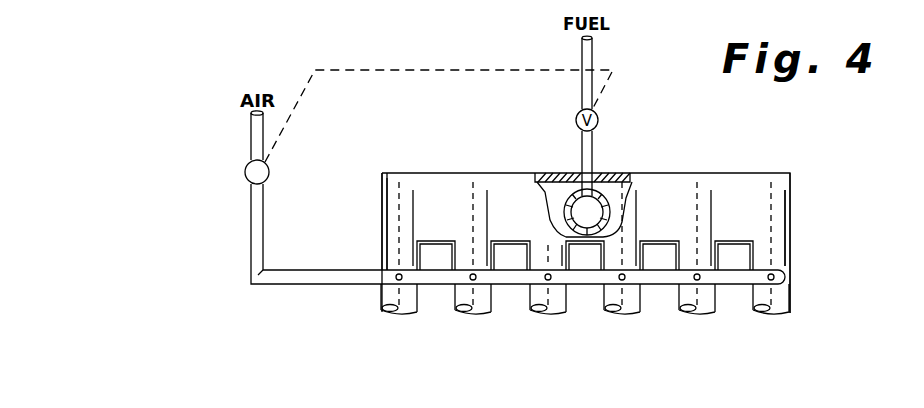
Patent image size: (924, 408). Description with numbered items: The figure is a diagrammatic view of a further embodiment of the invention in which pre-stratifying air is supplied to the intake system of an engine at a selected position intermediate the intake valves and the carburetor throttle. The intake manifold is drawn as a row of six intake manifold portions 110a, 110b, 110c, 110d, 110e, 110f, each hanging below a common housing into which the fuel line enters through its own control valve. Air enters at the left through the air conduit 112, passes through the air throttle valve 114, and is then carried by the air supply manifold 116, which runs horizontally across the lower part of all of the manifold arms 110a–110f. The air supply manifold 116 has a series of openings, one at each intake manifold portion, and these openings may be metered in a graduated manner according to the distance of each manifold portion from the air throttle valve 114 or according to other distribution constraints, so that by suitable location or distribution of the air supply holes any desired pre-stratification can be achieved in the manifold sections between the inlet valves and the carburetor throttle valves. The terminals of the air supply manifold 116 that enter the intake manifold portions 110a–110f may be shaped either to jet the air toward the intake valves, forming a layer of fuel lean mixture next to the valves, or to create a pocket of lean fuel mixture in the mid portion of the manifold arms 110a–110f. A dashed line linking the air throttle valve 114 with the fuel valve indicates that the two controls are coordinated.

The air conduit 112 is at (255, 142).
The air throttle valve 114 is at (248, 180).
The air supply manifold 116 is at (305, 286).
The intake manifold portion 110a is at (390, 258).
The intake manifold portion 110b is at (448, 250).
The intake manifold portion 110c is at (524, 250).
The intake manifold portion 110d is at (645, 252).
The intake manifold portion 110e is at (718, 252).
The intake manifold portion 110f is at (790, 257).